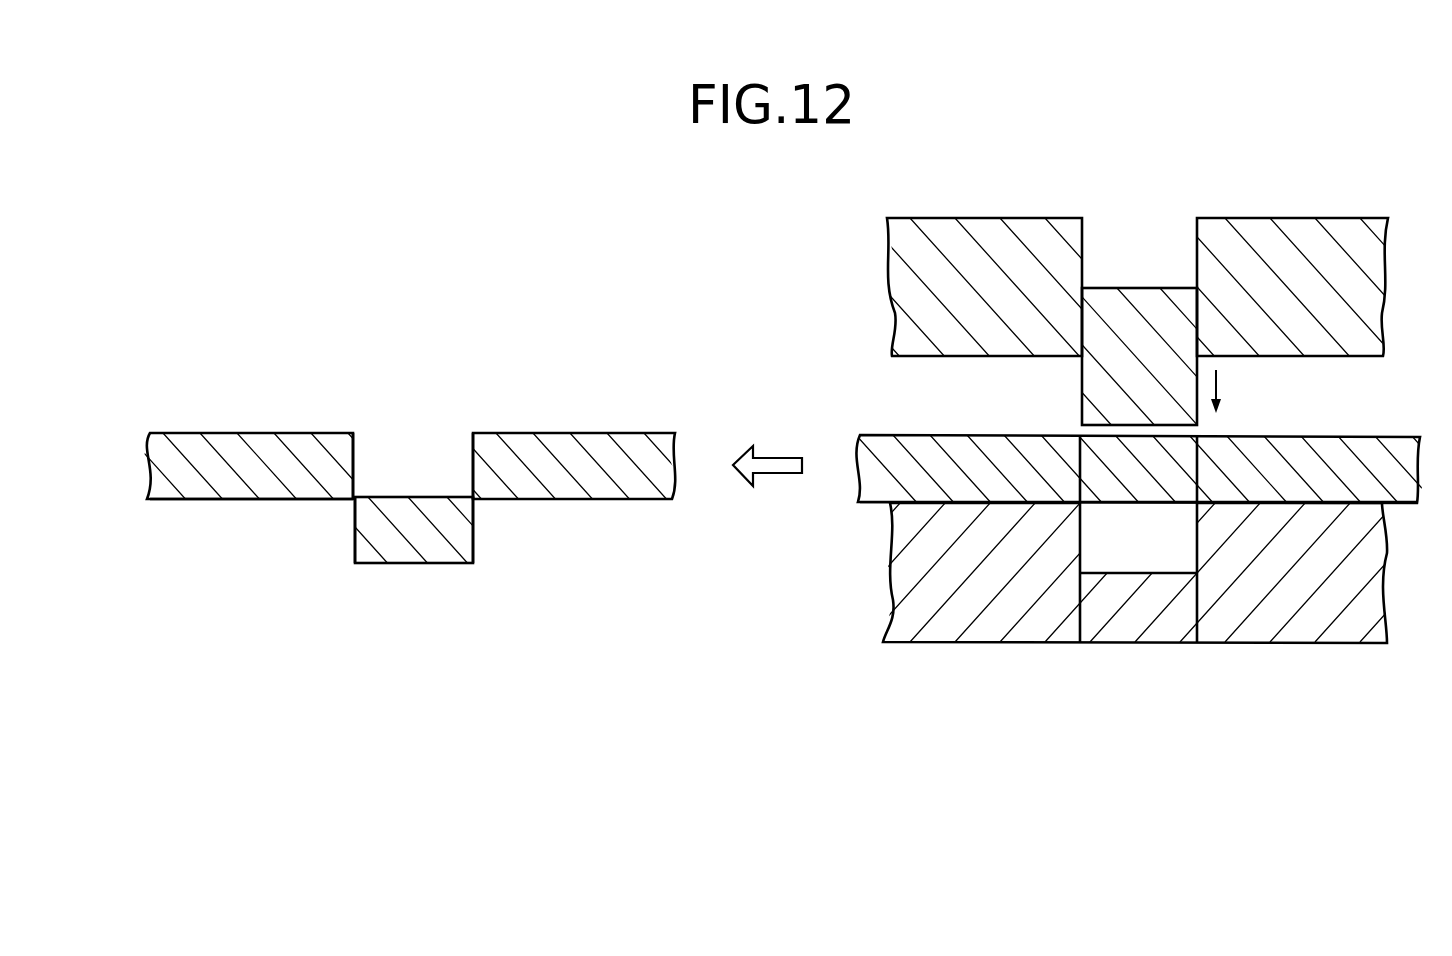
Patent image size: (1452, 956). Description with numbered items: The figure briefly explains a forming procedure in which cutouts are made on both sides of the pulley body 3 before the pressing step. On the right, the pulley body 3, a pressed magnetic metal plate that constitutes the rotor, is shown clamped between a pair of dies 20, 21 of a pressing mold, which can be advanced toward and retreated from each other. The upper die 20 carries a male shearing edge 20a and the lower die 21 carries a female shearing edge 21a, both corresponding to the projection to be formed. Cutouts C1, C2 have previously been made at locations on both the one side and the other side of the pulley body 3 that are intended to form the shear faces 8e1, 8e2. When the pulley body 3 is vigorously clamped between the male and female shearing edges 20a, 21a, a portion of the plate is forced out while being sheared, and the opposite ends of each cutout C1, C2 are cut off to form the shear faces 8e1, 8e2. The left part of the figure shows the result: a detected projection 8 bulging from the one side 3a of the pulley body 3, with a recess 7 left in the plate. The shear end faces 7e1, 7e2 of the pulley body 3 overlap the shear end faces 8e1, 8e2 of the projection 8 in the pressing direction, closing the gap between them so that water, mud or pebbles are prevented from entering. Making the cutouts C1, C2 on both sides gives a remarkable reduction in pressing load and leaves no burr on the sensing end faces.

The pulley body 3 is at (900, 426).
The one side of the pulley body 3a is at (218, 500).
The recess 7 is at (558, 502).
The shear end face 7e1 is at (355, 455).
The shear end face 7e2 is at (473, 455).
The detected projection 8 is at (410, 568).
The shear end face of the projection 8e1 is at (353, 535).
The shear end face of the projection 8e2 is at (473, 540).
The die 20 is at (1298, 211).
The male shearing edge 20a is at (1082, 410).
The die 21 is at (1306, 652).
The female shearing edge 21a is at (1195, 517).
The cutout C1 is at (1068, 478).
The cutout C2 is at (1200, 484).